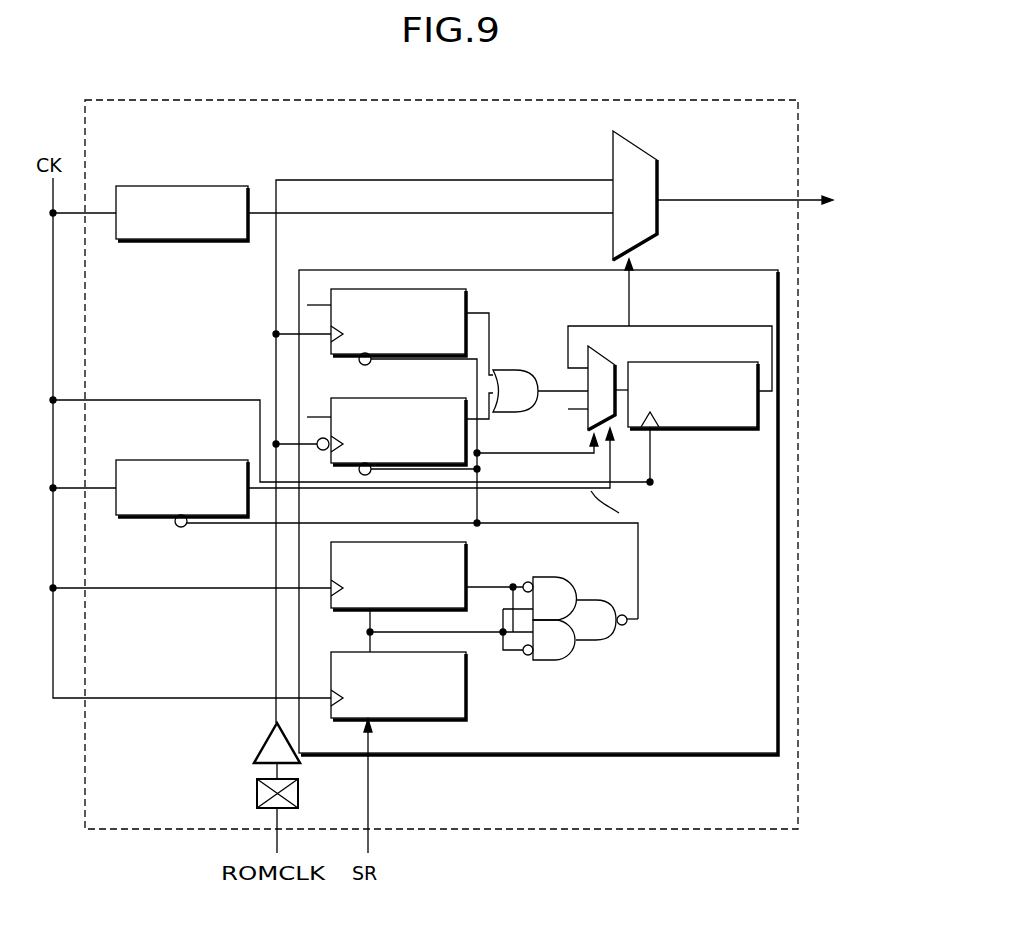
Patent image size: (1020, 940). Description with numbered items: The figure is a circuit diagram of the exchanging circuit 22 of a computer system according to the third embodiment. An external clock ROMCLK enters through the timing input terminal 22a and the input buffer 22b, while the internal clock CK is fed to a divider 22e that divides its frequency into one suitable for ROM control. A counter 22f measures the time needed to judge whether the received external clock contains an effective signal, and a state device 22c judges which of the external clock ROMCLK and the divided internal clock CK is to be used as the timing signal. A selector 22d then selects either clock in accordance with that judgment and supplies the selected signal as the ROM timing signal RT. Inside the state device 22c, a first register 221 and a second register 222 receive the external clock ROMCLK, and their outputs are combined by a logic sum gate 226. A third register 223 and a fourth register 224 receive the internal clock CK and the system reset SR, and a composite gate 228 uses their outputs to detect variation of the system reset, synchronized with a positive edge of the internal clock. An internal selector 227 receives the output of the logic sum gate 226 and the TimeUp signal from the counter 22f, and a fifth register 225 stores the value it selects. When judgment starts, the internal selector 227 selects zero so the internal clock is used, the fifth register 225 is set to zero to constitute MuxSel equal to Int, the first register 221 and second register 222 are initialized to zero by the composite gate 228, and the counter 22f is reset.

The exchanging circuit 22 is at (762, 100).
The timing input terminal 22a is at (257, 791).
The input buffer 22b is at (258, 750).
The state device 22c is at (656, 755).
The selector 22d is at (646, 146).
The divider 22e is at (184, 186).
The counter 22f is at (184, 460).
The first register 221 is at (468, 301).
The second register 222 is at (400, 398).
The third register 223 is at (467, 551).
The fourth register 224 is at (467, 692).
The fifth register 225 is at (685, 430).
The logic sum gate 226 is at (517, 368).
The internal selector 227 is at (612, 354).
The composite gate 228 is at (582, 653).